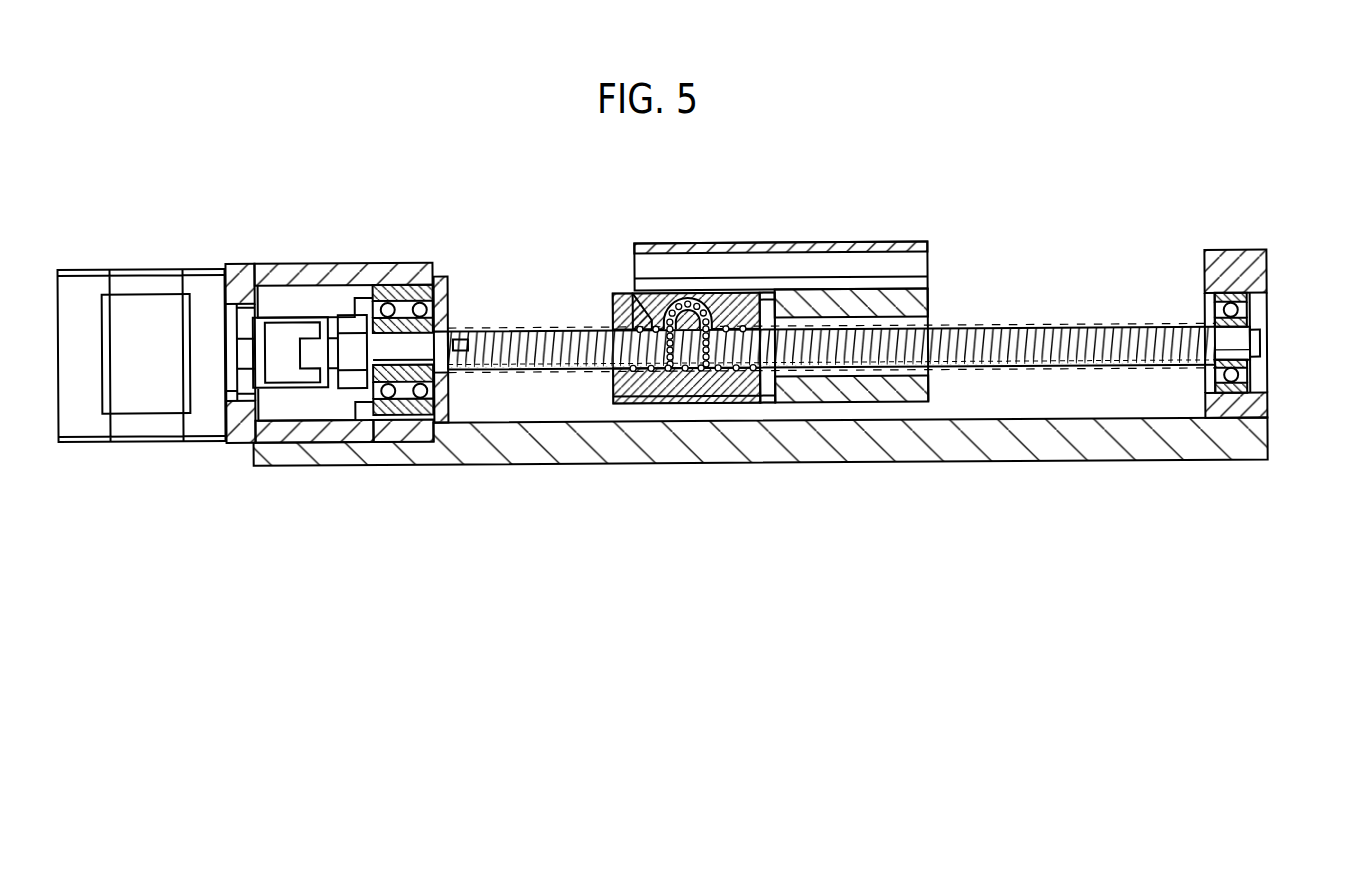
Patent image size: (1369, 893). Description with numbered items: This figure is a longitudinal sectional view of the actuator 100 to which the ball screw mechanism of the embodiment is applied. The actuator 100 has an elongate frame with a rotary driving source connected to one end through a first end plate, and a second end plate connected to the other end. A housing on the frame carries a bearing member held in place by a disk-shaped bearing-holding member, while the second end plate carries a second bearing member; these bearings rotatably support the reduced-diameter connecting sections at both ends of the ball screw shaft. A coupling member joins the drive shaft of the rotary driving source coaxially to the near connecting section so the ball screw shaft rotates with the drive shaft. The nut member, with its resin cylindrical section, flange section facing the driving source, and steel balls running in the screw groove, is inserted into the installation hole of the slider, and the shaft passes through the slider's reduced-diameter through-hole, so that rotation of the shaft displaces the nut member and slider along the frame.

The actuator 100 is at (990, 162).